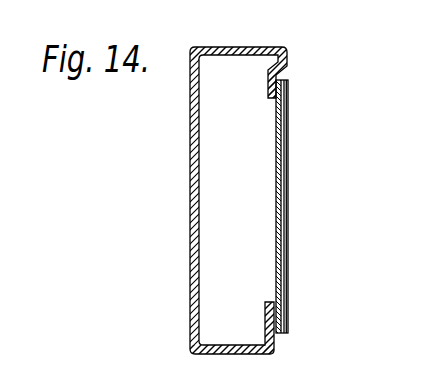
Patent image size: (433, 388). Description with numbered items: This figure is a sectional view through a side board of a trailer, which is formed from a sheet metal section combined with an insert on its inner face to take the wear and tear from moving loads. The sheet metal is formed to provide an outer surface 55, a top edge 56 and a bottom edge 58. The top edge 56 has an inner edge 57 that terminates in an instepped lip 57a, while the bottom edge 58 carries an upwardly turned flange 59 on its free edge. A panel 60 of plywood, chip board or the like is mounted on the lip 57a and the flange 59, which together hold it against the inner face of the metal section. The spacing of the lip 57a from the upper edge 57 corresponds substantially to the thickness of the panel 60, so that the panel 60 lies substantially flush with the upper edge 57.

The outer surface 55 is at (183, 181).
The top edge 56 is at (248, 47).
The inner edge 57 is at (288, 68).
The instepped lip 57a is at (277, 98).
The bottom edge 58 is at (223, 353).
The upwardly turned flange 59 is at (276, 333).
The panel 60 is at (280, 224).